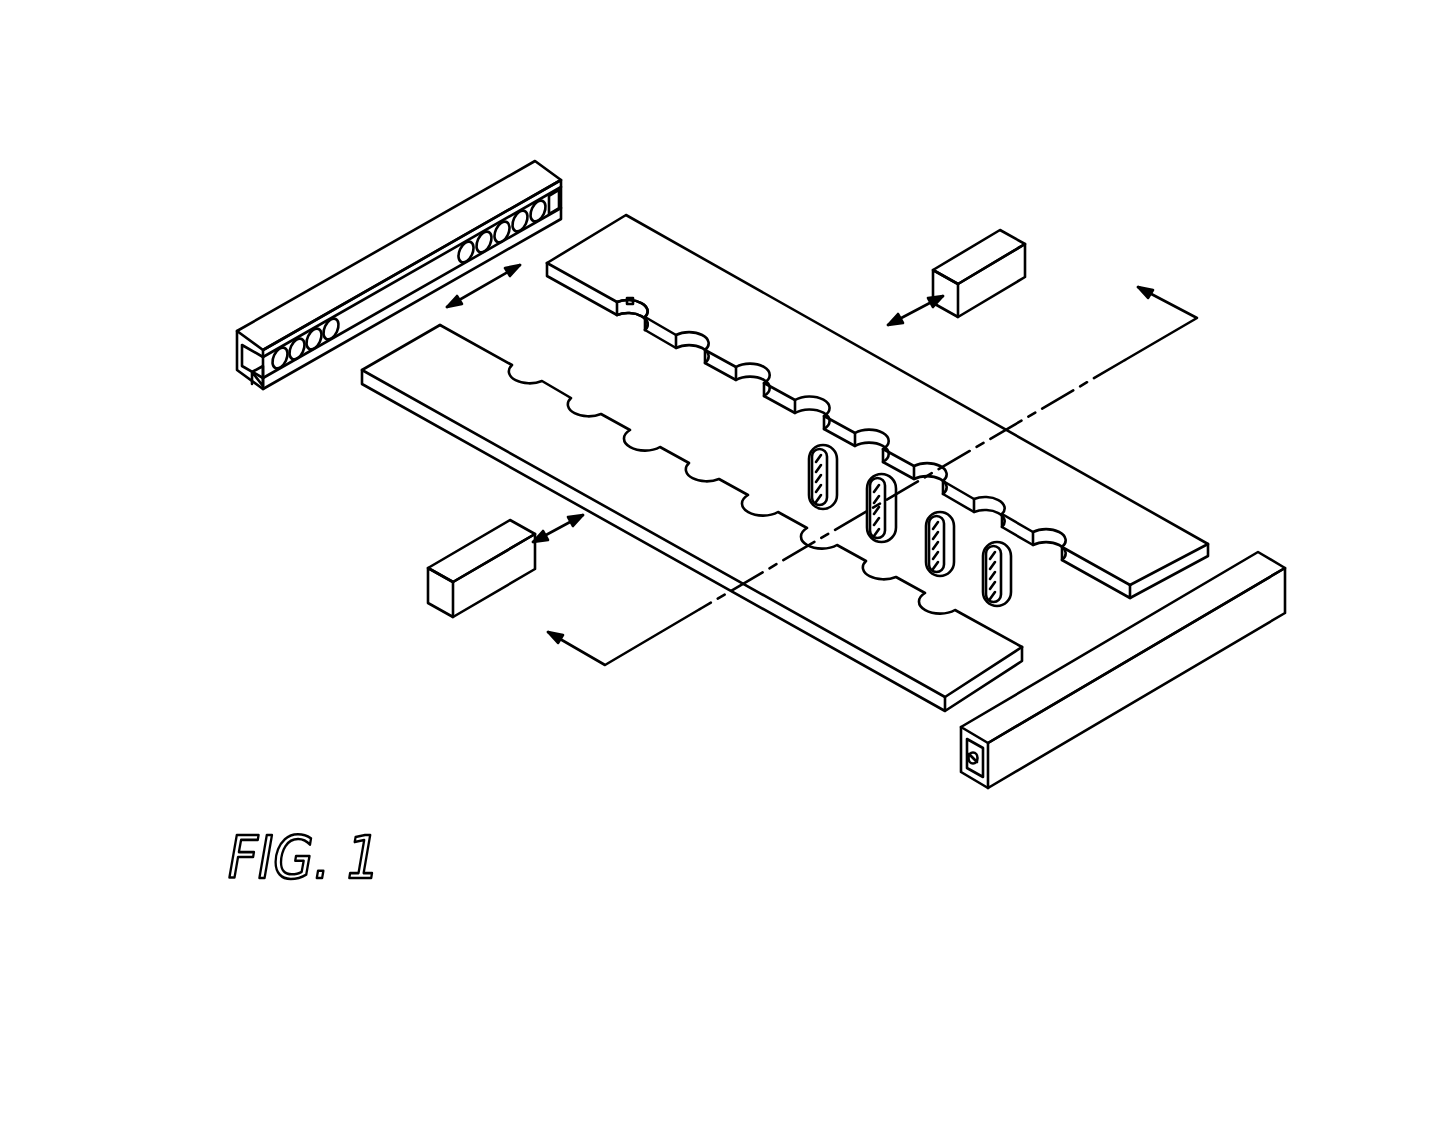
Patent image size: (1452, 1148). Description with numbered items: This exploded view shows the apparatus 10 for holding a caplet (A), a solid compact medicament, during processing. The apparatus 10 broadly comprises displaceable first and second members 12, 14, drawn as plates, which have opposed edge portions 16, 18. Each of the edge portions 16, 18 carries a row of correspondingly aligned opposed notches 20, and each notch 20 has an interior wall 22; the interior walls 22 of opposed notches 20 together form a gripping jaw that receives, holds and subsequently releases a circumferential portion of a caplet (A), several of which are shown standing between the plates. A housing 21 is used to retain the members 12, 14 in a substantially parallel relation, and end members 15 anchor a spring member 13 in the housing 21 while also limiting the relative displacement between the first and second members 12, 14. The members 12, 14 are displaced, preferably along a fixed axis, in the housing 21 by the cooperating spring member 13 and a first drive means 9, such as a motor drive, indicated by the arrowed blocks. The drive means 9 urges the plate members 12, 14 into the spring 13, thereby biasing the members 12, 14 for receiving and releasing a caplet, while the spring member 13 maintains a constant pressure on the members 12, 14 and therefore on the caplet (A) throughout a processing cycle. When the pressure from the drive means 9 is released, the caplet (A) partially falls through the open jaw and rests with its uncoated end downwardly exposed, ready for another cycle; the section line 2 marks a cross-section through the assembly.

The section line 2- 2 is at (872, 471).
The first drive means 9 is at (1024, 252).
The apparatus 10 is at (303, 550).
The first member 12 is at (877, 418).
The spring member 13 is at (528, 212).
The second member 14 is at (714, 511).
The end members 15 is at (563, 204).
The edge portion 16 is at (584, 299).
The edge portion 18 is at (503, 353).
The notch 20 is at (643, 307).
The housing 21 is at (396, 243).
The interior wall 22 is at (633, 301).
The caplet A is at (810, 472).